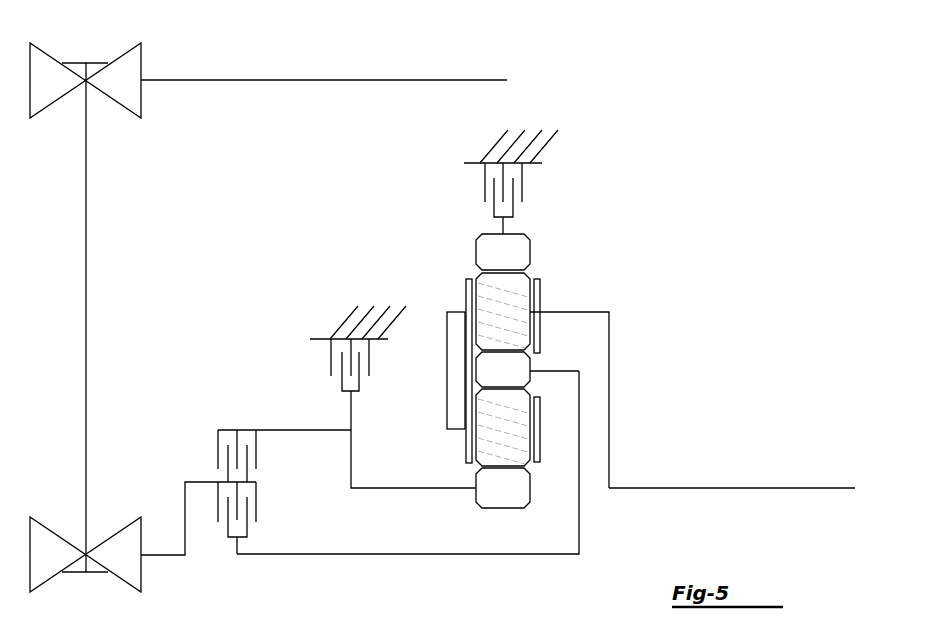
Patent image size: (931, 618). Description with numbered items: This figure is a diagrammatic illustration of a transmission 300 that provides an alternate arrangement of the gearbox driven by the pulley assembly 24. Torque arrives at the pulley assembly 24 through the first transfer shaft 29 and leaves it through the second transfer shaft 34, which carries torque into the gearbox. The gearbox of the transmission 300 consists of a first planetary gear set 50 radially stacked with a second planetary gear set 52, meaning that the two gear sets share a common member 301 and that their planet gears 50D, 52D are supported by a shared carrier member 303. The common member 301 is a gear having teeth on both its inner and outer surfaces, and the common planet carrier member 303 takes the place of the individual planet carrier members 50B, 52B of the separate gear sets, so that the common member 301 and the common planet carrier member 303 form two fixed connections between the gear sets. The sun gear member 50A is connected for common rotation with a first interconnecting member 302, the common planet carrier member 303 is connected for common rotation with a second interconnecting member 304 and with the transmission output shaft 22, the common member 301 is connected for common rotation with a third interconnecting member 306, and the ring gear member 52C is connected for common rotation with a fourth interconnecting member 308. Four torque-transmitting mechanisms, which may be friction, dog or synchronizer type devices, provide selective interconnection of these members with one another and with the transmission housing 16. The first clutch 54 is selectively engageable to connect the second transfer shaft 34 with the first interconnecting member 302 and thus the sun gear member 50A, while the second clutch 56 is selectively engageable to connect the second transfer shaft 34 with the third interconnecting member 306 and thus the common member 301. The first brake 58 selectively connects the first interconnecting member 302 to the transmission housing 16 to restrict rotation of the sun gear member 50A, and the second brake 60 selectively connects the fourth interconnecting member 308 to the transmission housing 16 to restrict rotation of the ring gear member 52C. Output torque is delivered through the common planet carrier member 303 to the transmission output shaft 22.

The transmission housing 16 is at (540, 147).
The transmission output shaft 22 is at (704, 487).
The pulley assembly 24 is at (92, 54).
The first transfer shaft 29 is at (257, 79).
The second transfer shaft 34 is at (163, 556).
The planetary gear set 50 is at (517, 565).
The sun gear member 50A is at (503, 488).
The planet carrier member 50B is at (541, 455).
The planet gears 50D is at (478, 468).
The planetary gear set 52 is at (550, 236).
The planet carrier member 52B is at (541, 292).
The ring gear member 52C is at (503, 252).
The planet gears 52D is at (528, 273).
The first clutch 54 is at (218, 450).
The second clutch 56 is at (256, 515).
The first brake 58 is at (331, 358).
The second brake 60 is at (522, 182).
The transmission 300 is at (581, 100).
The common member 301 is at (527, 369).
The first interconnecting member 302 is at (367, 489).
The common planet carrier member 303 is at (466, 292).
The second interconnecting member 304 is at (446, 405).
The third interconnecting member 306 is at (402, 555).
The fourth interconnecting member 308 is at (502, 226).